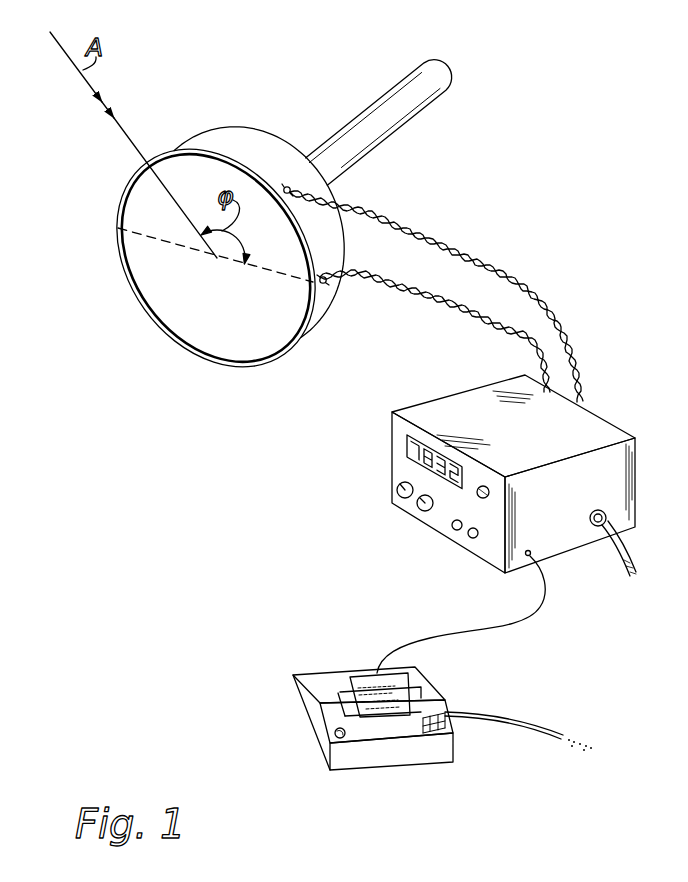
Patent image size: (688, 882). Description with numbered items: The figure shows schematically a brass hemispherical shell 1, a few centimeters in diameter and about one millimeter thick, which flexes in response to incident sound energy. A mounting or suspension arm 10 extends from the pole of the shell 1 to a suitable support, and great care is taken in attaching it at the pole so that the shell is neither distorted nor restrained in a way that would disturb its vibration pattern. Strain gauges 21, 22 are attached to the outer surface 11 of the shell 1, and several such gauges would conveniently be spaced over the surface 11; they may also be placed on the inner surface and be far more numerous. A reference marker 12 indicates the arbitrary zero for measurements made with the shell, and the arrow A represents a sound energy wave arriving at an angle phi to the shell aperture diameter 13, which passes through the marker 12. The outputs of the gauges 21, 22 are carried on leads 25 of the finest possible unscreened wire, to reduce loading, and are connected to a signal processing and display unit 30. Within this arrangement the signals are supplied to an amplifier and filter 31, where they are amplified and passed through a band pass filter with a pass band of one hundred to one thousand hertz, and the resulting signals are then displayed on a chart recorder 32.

The hemispherical shell 1 is at (115, 195).
The mounting or suspension arm 10 is at (404, 93).
The outer surface 11 is at (223, 136).
The shell aperture diameter 13 is at (153, 240).
The reference marker 12 is at (346, 214).
The strain gauge 21 is at (325, 284).
The strain gauge 22 is at (287, 186).
The leads 25 is at (436, 284).
The signal processing and display unit 30 is at (372, 597).
The amplifier and filter 31 is at (585, 423).
The chart recorder 32 is at (427, 689).